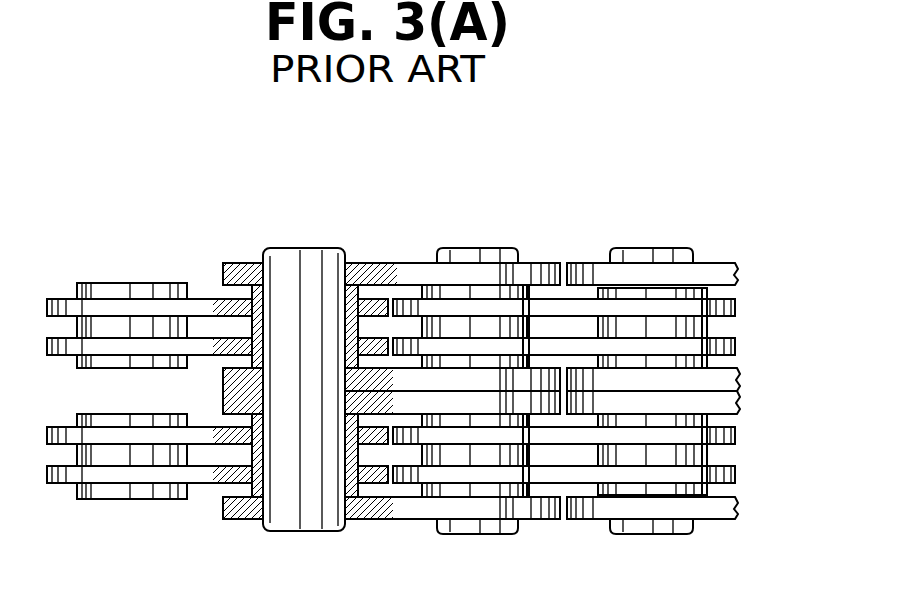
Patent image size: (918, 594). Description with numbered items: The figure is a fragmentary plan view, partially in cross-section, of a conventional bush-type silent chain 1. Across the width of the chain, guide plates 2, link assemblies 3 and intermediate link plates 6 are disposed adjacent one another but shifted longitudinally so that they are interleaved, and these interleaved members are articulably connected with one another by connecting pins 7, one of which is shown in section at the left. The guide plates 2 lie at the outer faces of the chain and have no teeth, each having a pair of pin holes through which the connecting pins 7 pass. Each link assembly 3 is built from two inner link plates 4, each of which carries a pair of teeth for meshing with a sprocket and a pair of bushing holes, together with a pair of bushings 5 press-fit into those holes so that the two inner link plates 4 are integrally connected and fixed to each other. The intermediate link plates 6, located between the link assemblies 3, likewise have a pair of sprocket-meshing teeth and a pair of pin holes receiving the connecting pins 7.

The silent chain 1 is at (557, 243).
The guide plate 2 is at (238, 262).
The link assembly 3 is at (793, 280).
The inner link plate 4 is at (737, 307).
The bushing 5 is at (687, 330).
The intermediate link plate 6 is at (725, 380).
The connecting pin 7 is at (315, 258).